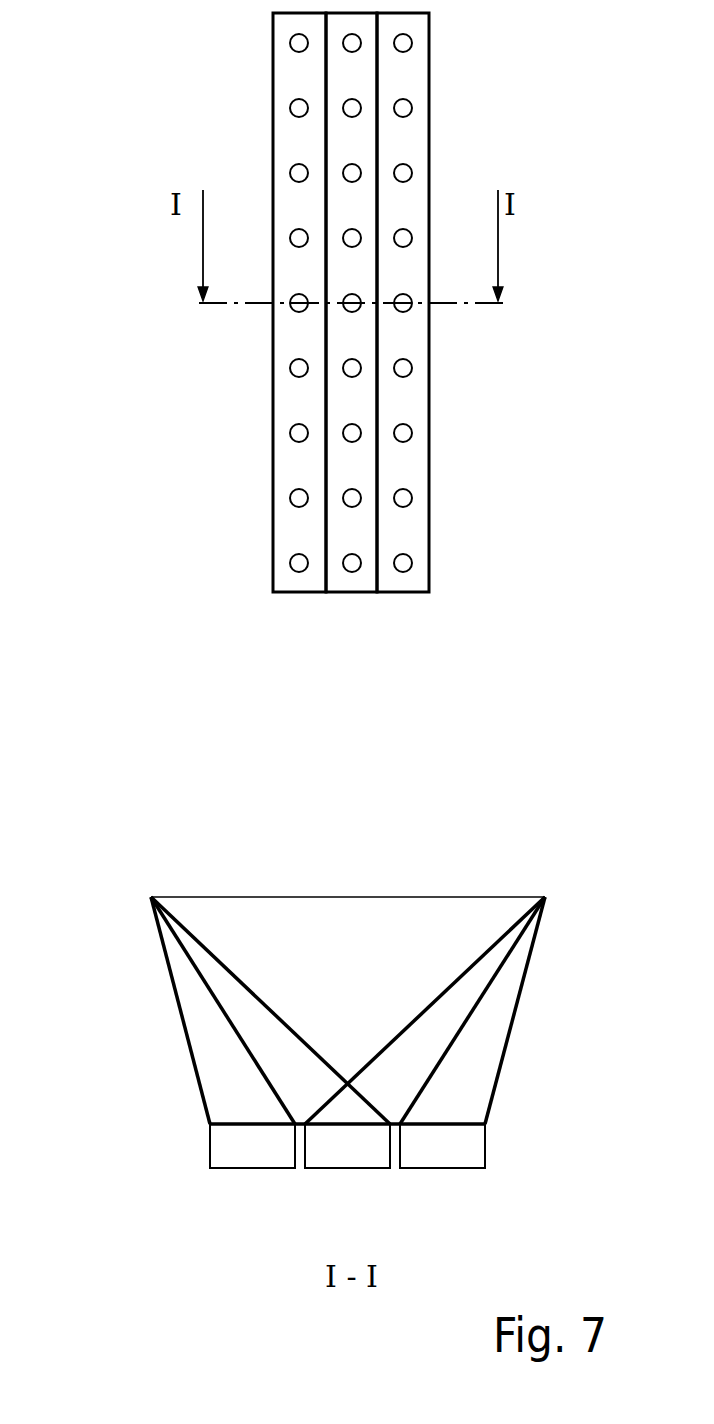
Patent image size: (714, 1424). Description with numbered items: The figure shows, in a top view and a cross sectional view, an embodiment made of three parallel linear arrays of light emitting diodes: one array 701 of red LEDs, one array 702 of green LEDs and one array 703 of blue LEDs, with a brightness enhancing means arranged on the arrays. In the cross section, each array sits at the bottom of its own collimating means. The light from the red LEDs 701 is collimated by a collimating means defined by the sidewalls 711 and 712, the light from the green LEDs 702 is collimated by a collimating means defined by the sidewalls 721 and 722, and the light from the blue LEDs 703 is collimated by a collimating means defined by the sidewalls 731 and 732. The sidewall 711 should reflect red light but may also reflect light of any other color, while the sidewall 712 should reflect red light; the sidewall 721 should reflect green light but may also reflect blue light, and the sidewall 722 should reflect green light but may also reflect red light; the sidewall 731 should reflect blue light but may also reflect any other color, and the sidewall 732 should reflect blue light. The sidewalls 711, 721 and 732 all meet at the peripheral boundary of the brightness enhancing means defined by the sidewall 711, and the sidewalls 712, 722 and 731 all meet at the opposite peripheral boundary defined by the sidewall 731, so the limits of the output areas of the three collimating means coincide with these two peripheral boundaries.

The array of red LEDs 701 is at (291, 592).
The array of green LEDs 702 is at (348, 592).
The array of blue LEDs 703 is at (405, 592).
The sidewall 711 is at (181, 1020).
The sidewall 712 is at (458, 973).
The sidewall 721 is at (186, 955).
The sidewall 722 is at (471, 1015).
The sidewall 731 is at (500, 1067).
The sidewall 732 is at (211, 950).